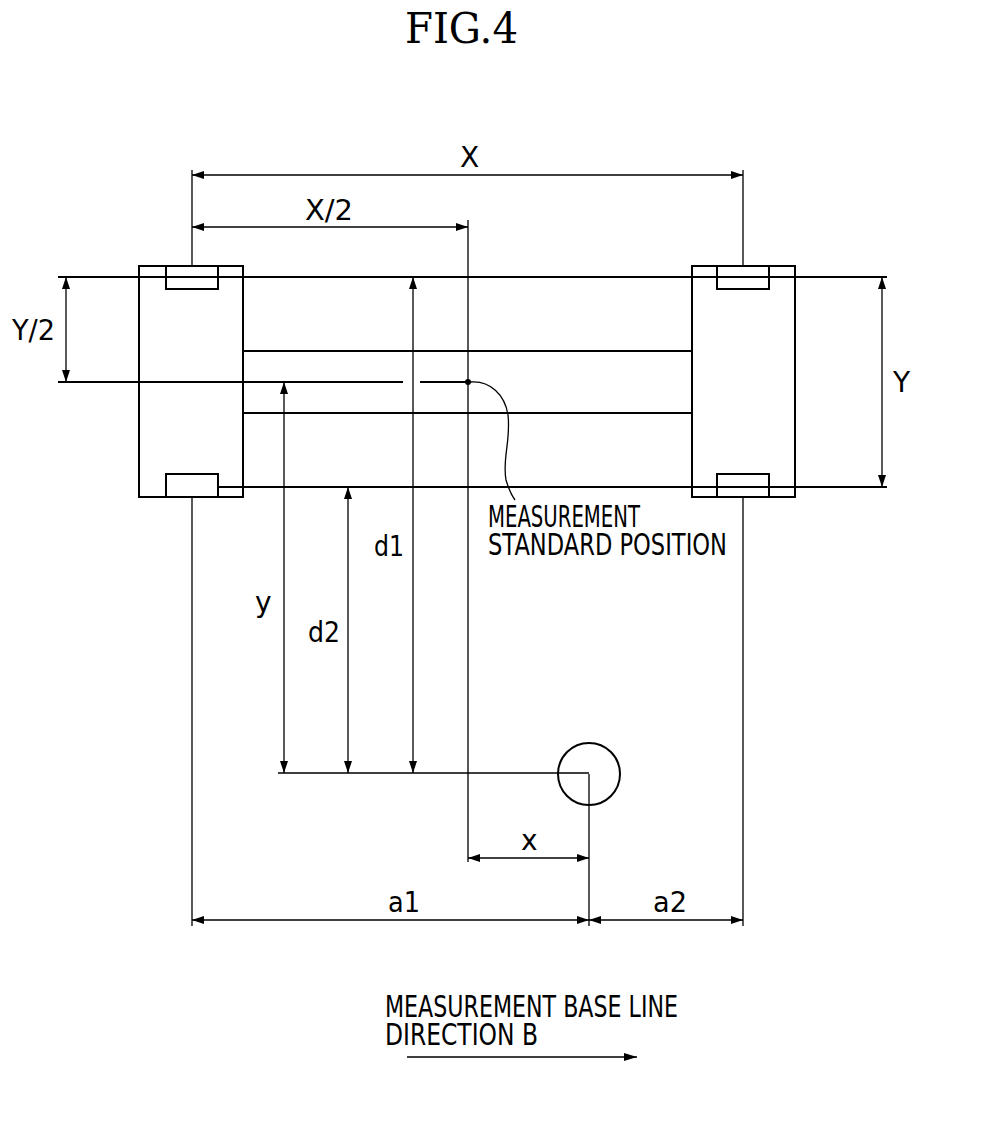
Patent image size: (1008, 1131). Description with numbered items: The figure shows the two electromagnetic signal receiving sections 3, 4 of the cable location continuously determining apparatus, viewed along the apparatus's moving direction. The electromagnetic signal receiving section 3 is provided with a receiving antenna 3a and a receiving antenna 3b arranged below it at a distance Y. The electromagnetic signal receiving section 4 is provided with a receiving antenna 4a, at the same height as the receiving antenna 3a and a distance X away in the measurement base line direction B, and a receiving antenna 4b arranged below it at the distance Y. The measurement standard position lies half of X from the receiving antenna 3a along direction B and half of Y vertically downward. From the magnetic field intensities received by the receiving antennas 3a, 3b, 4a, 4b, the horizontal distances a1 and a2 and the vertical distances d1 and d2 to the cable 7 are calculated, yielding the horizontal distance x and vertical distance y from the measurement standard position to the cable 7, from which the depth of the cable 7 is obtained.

The electromagnetic signal receiving section 3 is at (243, 313).
The receiving antenna 3a is at (177, 266).
The receiving antenna 3b is at (173, 500).
The electromagnetic signal receiving section 4 is at (795, 397).
The receiving antenna 4a is at (762, 266).
The receiving antenna 4b is at (757, 500).
The cable 7 is at (594, 743).